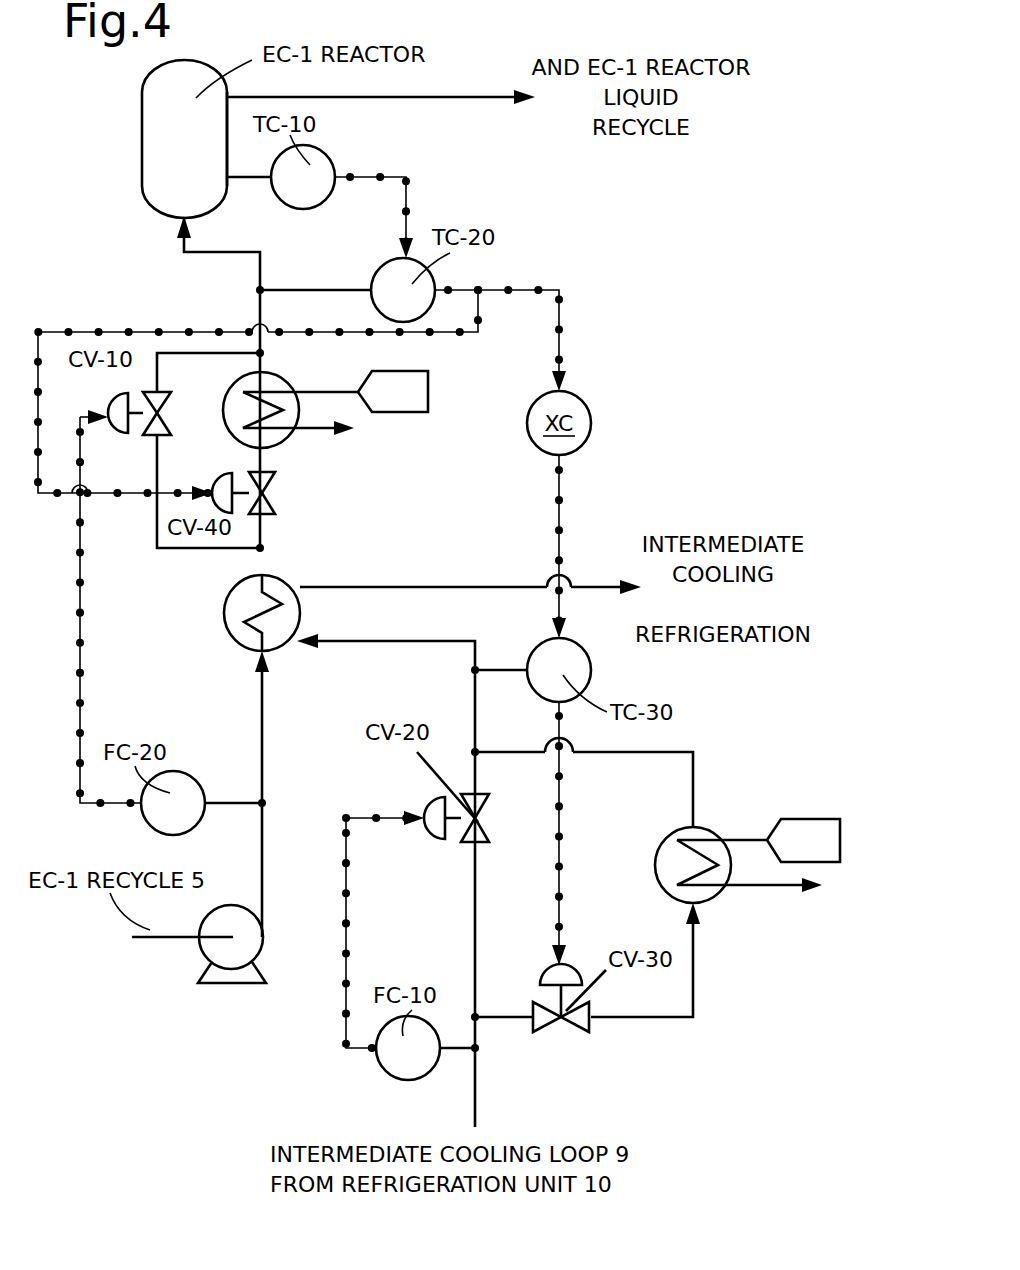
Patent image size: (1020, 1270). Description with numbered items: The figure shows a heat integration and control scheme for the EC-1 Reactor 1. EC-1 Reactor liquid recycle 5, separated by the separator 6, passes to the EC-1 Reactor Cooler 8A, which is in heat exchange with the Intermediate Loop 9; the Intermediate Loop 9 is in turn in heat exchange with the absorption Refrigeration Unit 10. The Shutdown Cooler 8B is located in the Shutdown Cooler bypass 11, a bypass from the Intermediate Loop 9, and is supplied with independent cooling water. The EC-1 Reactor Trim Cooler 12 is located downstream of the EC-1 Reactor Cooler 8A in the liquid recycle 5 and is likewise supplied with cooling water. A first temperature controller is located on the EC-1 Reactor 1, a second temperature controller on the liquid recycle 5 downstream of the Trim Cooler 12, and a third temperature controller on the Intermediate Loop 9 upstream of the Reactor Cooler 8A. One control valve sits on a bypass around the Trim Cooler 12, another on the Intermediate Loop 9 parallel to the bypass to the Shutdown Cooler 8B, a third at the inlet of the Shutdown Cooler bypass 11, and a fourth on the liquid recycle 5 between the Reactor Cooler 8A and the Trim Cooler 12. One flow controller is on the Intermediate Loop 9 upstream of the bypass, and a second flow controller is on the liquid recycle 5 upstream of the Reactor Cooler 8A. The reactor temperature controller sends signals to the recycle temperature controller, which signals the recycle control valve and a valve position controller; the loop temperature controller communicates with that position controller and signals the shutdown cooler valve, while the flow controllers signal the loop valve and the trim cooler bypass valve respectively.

The EC-1 Reactor 1 is at (172, 147).
The EC-1 Reactor liquid recycle 5 is at (446, 97).
The separator 6 is at (640, 37).
The EC-1 Reactor Cooler 8A is at (202, 630).
The Shutdown Cooler 8B is at (755, 817).
The Intermediate Loop 9 is at (400, 643).
The absorption Refrigeration Unit 10 is at (722, 664).
The Shutdown Cooler bypass 11 is at (598, 753).
The EC-1 Reactor Trim Cooler 12 is at (348, 445).